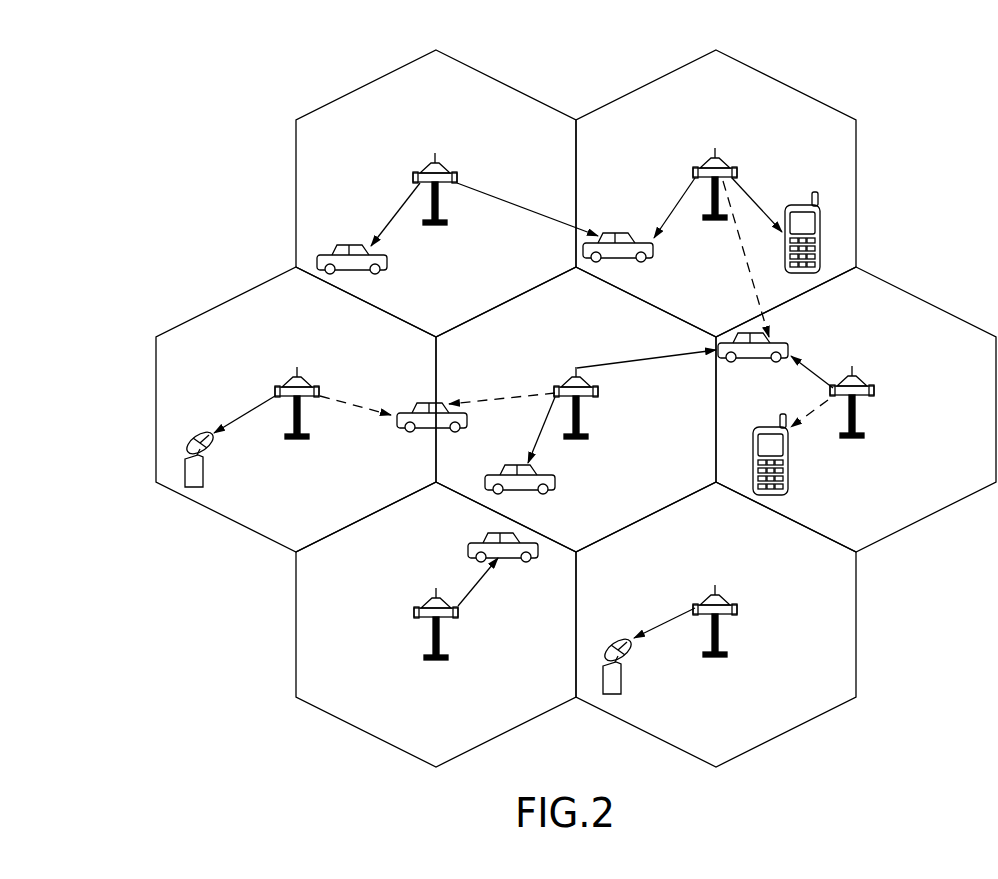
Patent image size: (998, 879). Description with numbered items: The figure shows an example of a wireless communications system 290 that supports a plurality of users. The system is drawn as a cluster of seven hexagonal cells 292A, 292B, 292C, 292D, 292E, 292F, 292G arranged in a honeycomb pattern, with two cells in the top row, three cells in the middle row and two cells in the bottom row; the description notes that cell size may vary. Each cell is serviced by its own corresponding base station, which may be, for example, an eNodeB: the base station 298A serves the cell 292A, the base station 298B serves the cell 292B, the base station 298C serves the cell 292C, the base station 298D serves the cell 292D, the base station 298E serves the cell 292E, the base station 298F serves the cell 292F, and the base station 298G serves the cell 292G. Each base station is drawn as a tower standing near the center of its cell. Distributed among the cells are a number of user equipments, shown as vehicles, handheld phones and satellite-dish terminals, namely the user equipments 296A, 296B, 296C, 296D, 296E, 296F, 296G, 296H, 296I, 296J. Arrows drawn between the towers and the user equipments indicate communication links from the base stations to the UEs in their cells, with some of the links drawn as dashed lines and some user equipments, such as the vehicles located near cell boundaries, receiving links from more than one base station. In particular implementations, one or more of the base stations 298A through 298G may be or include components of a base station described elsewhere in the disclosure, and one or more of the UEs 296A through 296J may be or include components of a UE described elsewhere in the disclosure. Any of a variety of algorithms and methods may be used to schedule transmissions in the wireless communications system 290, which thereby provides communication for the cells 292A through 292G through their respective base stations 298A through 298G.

The wireless communications system 290 is at (92, 124).
The cell 292A is at (458, 91).
The cell 292B is at (737, 91).
The cell 292C is at (320, 314).
The cell 292D is at (596, 313).
The cell 292E is at (877, 314).
The cell 292F is at (458, 524).
The cell 292G is at (738, 524).
The base station 298A is at (433, 152).
The base station 298B is at (715, 148).
The base station 298C is at (297, 367).
The base station 298D is at (576, 367).
The base station 298E is at (852, 366).
The base station 298F is at (436, 588).
The base station 298G is at (715, 585).
The user equipment 296A is at (387, 267).
The user equipment 296B is at (799, 205).
The user equipment 296C is at (203, 473).
The user equipment 296D is at (557, 488).
The user equipment 296E is at (753, 358).
The user equipment 296F is at (536, 556).
The user equipment 296G is at (623, 682).
The user equipment 296H is at (402, 428).
The user equipment 296I is at (789, 480).
The user equipment 296J is at (620, 243).